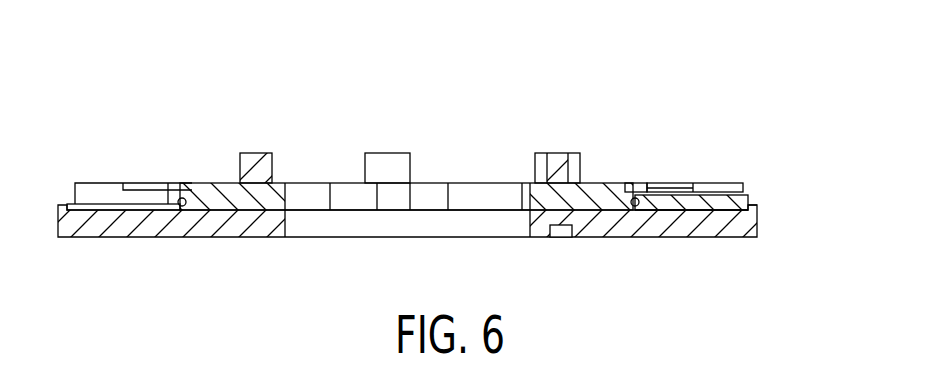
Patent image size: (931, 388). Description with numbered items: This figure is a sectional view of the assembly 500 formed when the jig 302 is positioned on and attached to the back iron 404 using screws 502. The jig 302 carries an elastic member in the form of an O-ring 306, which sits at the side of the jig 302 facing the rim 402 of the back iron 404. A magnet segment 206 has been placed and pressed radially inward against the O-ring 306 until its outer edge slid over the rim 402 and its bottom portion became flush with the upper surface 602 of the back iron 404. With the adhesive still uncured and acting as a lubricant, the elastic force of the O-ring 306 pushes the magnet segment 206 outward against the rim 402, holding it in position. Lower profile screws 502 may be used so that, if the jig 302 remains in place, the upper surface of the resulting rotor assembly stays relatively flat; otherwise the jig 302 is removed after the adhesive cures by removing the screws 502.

The assembly 500 is at (228, 112).
The screws 502 is at (574, 154).
The jig 302 is at (610, 182).
The O-ring 306 is at (638, 199).
The magnet segment 206 is at (740, 202).
The rim 402 is at (757, 210).
The back iron 404 is at (652, 228).
The upper surface 602 is at (705, 211).